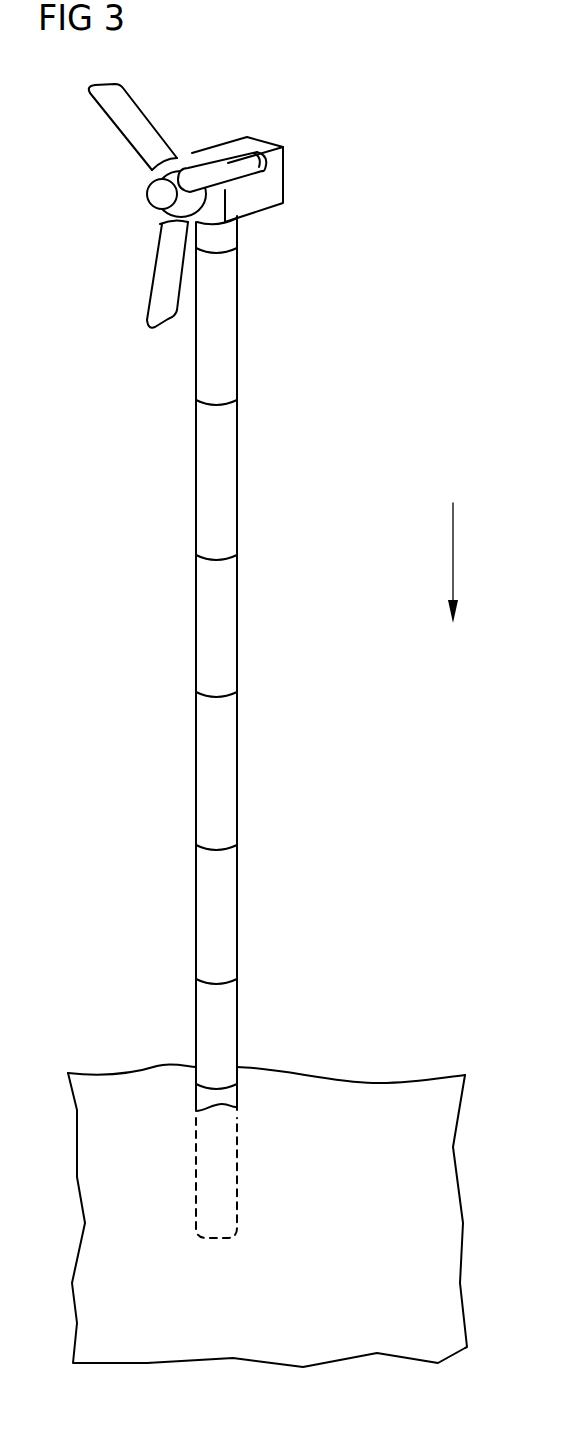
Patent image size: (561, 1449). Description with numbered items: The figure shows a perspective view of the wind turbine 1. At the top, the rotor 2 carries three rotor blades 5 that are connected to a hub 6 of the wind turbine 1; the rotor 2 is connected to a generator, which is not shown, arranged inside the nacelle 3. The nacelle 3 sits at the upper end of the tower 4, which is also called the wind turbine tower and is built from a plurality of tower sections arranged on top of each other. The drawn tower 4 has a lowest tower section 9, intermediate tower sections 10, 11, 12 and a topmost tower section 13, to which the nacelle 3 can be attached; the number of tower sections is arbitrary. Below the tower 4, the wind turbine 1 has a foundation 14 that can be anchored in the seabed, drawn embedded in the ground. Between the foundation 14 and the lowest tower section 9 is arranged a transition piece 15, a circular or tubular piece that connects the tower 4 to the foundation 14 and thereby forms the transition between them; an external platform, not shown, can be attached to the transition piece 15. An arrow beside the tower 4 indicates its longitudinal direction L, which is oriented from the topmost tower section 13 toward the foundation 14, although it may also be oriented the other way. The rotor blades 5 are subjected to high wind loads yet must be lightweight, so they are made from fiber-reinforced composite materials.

The wind turbine 1 is at (238, 98).
The rotor 2 is at (97, 122).
The nacelle 3 is at (276, 193).
The tower 4 is at (185, 601).
The rotor blade 5 is at (142, 125).
The hub 6 is at (158, 195).
The lowest tower section 9 is at (238, 913).
The tower section 10 is at (238, 750).
The tower section 11 is at (238, 610).
The tower section 12 is at (238, 460).
The topmost tower section 13 is at (238, 295).
The foundation 14 is at (238, 1172).
The transition piece 15 is at (239, 1018).
The longitudinal direction L is at (454, 552).